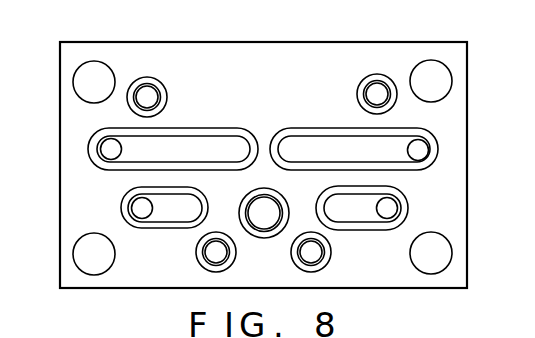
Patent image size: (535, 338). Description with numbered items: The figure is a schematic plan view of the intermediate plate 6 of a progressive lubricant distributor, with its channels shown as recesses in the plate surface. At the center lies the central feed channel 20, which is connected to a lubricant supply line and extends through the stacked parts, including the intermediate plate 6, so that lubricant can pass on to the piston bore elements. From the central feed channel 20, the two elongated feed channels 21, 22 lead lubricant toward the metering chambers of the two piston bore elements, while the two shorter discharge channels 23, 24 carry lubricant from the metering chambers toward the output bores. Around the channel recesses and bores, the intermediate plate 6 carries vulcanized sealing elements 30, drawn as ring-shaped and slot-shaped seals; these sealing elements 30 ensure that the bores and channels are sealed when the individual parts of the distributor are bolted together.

The intermediate plate 6 is at (469, 217).
The central feed channel 20 is at (267, 220).
The feed channel 21 is at (147, 92).
The feed channel 22 is at (375, 97).
The discharge channel 23 is at (186, 213).
The discharge channel 24 is at (315, 251).
The vulcanized sealing elements 30 is at (90, 145).